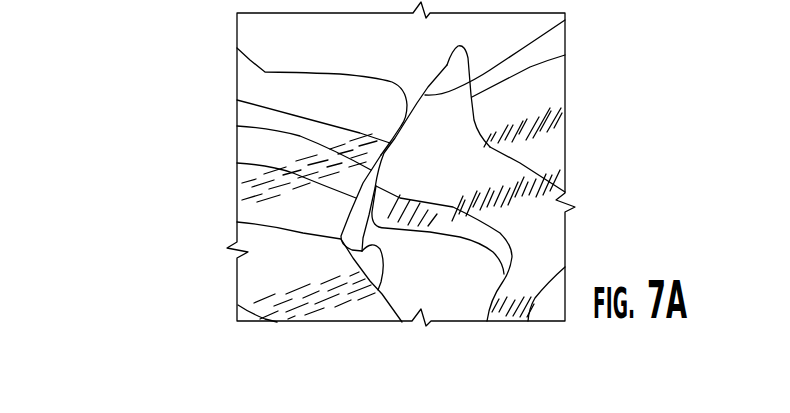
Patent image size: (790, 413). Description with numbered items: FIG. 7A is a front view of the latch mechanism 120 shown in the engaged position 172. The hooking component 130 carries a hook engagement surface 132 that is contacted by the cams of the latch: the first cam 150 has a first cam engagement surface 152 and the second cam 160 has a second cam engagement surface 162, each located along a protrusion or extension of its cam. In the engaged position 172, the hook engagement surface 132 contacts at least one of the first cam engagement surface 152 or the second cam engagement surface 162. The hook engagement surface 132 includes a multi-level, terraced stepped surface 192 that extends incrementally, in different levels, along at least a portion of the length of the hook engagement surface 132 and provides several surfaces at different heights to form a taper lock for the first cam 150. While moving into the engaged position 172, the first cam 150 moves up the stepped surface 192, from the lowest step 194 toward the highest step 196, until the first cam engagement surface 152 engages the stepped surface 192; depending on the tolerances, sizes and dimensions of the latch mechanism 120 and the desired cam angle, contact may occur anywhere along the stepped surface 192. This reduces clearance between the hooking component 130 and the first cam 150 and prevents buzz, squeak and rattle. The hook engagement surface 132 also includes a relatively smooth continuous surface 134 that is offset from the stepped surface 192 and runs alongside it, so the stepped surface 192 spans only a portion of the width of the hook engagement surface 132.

The latch mechanism 120 is at (618, 123).
The hooking component 130 is at (237, 288).
The hook engagement surface 132 is at (237, 126).
The continuous surface 134 is at (237, 163).
The first cam 150 is at (561, 116).
The first cam engagement surface 152 is at (383, 192).
The second cam 160 is at (562, 238).
The second cam engagement surface 162 is at (565, 20).
The engaged position 172 is at (155, 137).
The stepped surface 192 is at (379, 272).
The lowest step 194 is at (237, 100).
The highest step 196 is at (237, 222).